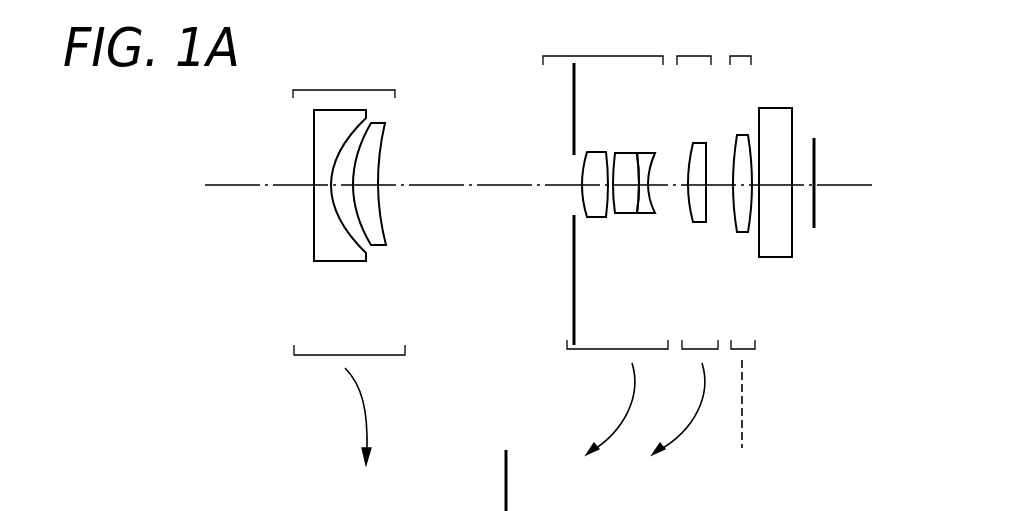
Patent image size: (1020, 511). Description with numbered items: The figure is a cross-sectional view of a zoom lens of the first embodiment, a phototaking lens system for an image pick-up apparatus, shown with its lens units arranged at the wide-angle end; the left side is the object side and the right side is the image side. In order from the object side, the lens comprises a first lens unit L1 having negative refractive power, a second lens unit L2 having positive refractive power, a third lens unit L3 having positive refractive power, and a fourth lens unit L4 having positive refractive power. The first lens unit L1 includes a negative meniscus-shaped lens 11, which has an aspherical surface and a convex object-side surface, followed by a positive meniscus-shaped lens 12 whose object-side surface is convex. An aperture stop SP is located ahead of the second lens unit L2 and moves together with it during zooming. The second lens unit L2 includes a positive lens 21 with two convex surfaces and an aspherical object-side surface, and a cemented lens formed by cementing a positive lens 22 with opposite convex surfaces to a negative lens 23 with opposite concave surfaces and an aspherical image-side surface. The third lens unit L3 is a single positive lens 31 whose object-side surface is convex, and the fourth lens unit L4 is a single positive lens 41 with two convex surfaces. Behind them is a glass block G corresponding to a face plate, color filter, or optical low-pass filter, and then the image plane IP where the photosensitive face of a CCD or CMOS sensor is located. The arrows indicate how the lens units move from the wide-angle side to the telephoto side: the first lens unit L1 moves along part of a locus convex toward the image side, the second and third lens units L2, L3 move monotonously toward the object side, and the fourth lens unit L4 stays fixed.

The first lens unit L1 is at (349, 264).
The negative meniscus-shaped lens 11 is at (322, 131).
The positive meniscus-shaped lens 12 is at (375, 139).
The aperture stop SP is at (572, 97).
The second lens unit L2 is at (605, 242).
The positive lens 21 is at (597, 156).
The positive lens 22 is at (628, 157).
The negative lens 23 is at (647, 155).
The third lens unit L3 is at (685, 242).
The positive lens 31 is at (693, 221).
The fourth lens unit L4 is at (741, 239).
The positive lens 41 is at (742, 137).
The glass block G is at (772, 108).
The image plane IP is at (816, 152).